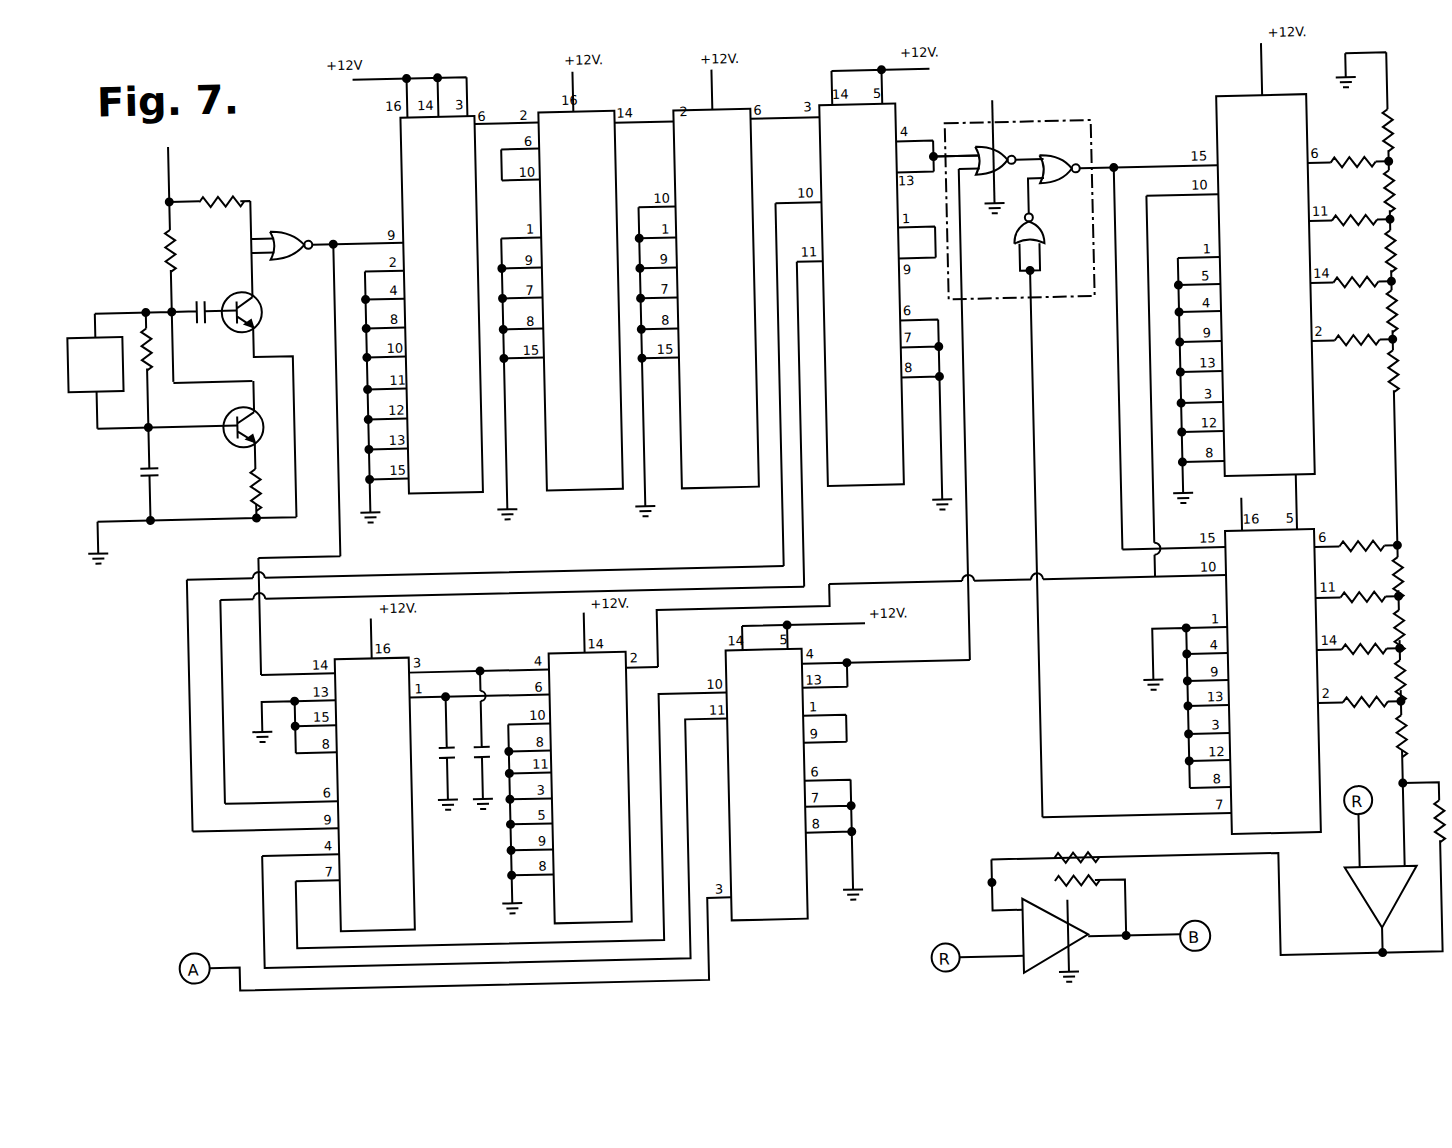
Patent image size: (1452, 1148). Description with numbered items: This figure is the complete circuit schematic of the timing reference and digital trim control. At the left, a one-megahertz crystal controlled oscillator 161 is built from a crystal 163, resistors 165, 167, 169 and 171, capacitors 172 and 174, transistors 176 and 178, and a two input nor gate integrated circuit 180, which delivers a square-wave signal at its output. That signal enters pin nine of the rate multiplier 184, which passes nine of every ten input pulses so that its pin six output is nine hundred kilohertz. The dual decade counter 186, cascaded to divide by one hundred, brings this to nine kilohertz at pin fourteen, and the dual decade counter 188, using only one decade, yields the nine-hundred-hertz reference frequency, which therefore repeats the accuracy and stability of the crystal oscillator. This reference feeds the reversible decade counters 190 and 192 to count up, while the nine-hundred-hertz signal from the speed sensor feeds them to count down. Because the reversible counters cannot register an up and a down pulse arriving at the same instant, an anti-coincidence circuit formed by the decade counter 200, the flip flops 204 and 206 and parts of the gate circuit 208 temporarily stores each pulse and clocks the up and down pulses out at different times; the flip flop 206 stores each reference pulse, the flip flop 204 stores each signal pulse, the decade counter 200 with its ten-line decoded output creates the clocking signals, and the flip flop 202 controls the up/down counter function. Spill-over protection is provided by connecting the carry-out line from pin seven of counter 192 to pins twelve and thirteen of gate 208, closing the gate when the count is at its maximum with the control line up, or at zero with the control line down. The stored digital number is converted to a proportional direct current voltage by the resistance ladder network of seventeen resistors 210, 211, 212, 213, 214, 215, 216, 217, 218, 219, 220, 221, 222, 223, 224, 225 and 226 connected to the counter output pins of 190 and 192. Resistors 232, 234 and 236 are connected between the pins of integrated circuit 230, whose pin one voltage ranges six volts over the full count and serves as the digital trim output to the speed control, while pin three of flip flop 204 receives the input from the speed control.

The crystal controlled oscillator 161 is at (147, 272).
The crystal 163 is at (100, 322).
The resistor 165 is at (153, 346).
The resistor 167 is at (180, 240).
The resistor 169 is at (254, 476).
The resistor 171 is at (222, 186).
The capacitor 172 is at (164, 458).
The capacitor 174 is at (203, 288).
The transistor 176 is at (227, 418).
The transistor 178 is at (274, 298).
The two input nor gate integrated circuit 180 is at (302, 222).
The rate multiplier integrated circuit 184 is at (470, 217).
The dual decade counter integrated circuit 186 is at (608, 205).
The dual decade counter integrated circuit 188 is at (744, 207).
The reversible decade counter integrated circuit 190 is at (1293, 202).
The reversible decade counter integrated circuit 192 is at (1292, 677).
The decade counter integrated circuit 200 is at (392, 761).
The D type flip flop integrated circuit 202 is at (607, 761).
The D type flip flop integrated circuit 204 is at (784, 763).
The D type flip flop integrated circuit 206 is at (890, 205).
The gate integrated circuit 208 is at (1104, 136).
The resistor 210 is at (1360, 170).
The resistor 211 is at (1362, 228).
The resistor 212 is at (1362, 290).
The resistor 213 is at (1376, 326).
The resistor 214 is at (1404, 138).
The resistor 215 is at (1406, 208).
The resistor 216 is at (1404, 268).
The resistor 217 is at (1404, 334).
The resistor 218 is at (1428, 408).
The resistor 219 is at (1374, 530).
The resistor 220 is at (1374, 590).
The resistor 221 is at (1374, 642).
The resistor 222 is at (1376, 694).
The resistor 223 is at (1408, 584).
The resistor 224 is at (1408, 640).
The resistor 225 is at (1406, 690).
The resistor 226 is at (1406, 748).
The integrated circuit 230 is at (1336, 914).
The resistor 232 is at (1448, 792).
The resistor 234 is at (1060, 862).
The resistor 236 is at (1096, 886).